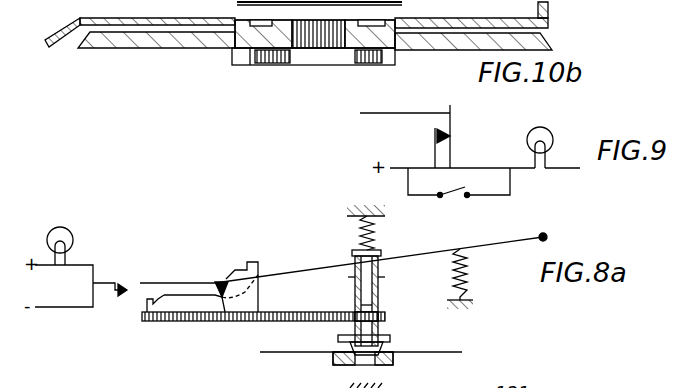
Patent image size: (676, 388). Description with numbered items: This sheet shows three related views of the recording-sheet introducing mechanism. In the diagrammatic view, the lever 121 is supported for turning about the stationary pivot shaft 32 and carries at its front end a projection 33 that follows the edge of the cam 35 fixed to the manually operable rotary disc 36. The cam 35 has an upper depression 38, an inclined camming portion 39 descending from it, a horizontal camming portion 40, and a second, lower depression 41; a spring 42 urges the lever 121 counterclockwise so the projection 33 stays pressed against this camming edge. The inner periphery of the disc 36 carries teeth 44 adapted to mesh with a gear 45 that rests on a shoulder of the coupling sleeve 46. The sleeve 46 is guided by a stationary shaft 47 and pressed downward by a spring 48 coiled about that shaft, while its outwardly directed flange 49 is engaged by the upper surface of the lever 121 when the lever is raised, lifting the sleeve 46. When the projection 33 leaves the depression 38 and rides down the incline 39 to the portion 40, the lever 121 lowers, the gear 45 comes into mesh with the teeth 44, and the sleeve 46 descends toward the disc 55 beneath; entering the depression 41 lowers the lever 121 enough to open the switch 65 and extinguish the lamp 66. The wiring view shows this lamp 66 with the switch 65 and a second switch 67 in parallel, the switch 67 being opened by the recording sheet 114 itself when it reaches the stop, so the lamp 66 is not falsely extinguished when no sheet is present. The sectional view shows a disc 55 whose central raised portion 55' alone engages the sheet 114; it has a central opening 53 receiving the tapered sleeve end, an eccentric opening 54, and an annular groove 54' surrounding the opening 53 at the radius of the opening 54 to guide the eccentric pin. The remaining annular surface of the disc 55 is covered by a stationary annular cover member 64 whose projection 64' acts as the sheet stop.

In FIG. 8a, the pivot shaft 32 is at (547, 236).
In FIG. 8a, the projection 33 is at (228, 300).
In FIG. 8a, the cam 35 is at (245, 304).
In FIG. 8a, the rotary disc 36 is at (280, 320).
In FIG. 8a, the depression 38 is at (258, 262).
In FIG. 8a, the inclined camming portion 39 is at (220, 283).
In FIG. 8a, the horizontal camming portion 40 is at (200, 295).
In FIG. 8a, the lower depression 41 is at (156, 313).
In FIG. 8a, the spring 42 is at (467, 273).
In FIG. 8a, the teeth 44 is at (332, 312).
In FIG. 8a, the gear 45 is at (385, 318).
In FIG. 8a, the coupling sleeve 46 is at (378, 302).
In FIG. 8a, the stationary shaft 47 is at (360, 243).
In FIG. 8a, the spring 48 is at (375, 237).
In FIG. 8a, the flange 49 is at (357, 257).
In FIG. 10b, the central opening 53 is at (317, 40).
In FIG. 10b, the eccentric opening 54 is at (372, 60).
In FIG. 10b, the annular groove 54' is at (274, 58).
In FIG. 10b, the disc 55 is at (156, 56).
In FIG. 8a, the disc 55 is at (361, 354).
In FIG. 10b, the central raised portion 55' is at (296, 23).
In FIG. 10b, the annular cover member 64 is at (473, 25).
In FIG. 10b, the projection 64' is at (565, 10).
In FIG. 9, the switch 65 is at (455, 196).
In FIG. 8a, the switch 65 is at (123, 285).
In FIG. 9, the lamp 66 is at (553, 142).
In FIG. 8a, the lamp 66 is at (73, 243).
In FIG. 9, the switch 67 is at (452, 136).
In FIG. 9, the recording sheet 114 is at (410, 111).
In FIG. 8a, the lever 121 is at (425, 256).